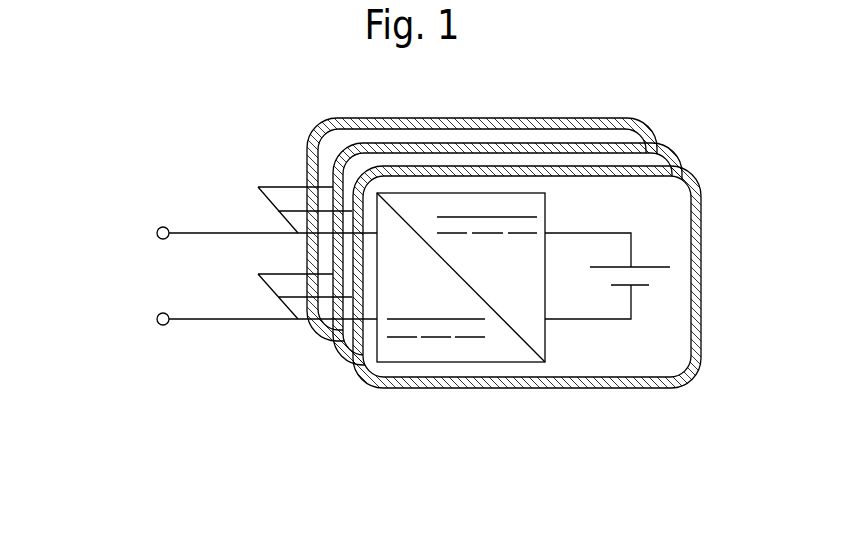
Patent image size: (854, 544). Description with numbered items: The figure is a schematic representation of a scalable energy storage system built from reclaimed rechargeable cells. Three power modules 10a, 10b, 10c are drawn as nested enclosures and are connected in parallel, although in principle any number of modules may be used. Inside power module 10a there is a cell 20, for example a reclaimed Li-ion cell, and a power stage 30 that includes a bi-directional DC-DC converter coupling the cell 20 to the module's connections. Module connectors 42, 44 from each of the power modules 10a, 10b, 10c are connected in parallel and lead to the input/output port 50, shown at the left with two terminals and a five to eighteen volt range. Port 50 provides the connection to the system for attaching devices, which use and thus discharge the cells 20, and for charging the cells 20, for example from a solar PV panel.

The power module 10a is at (701, 194).
The power module 10b is at (673, 152).
The power module 10c is at (650, 126).
The cell 20 is at (660, 320).
The power stage 30 is at (425, 205).
The module connector 42 is at (300, 210).
The module connector 44 is at (302, 303).
The input/output port 50 is at (105, 198).